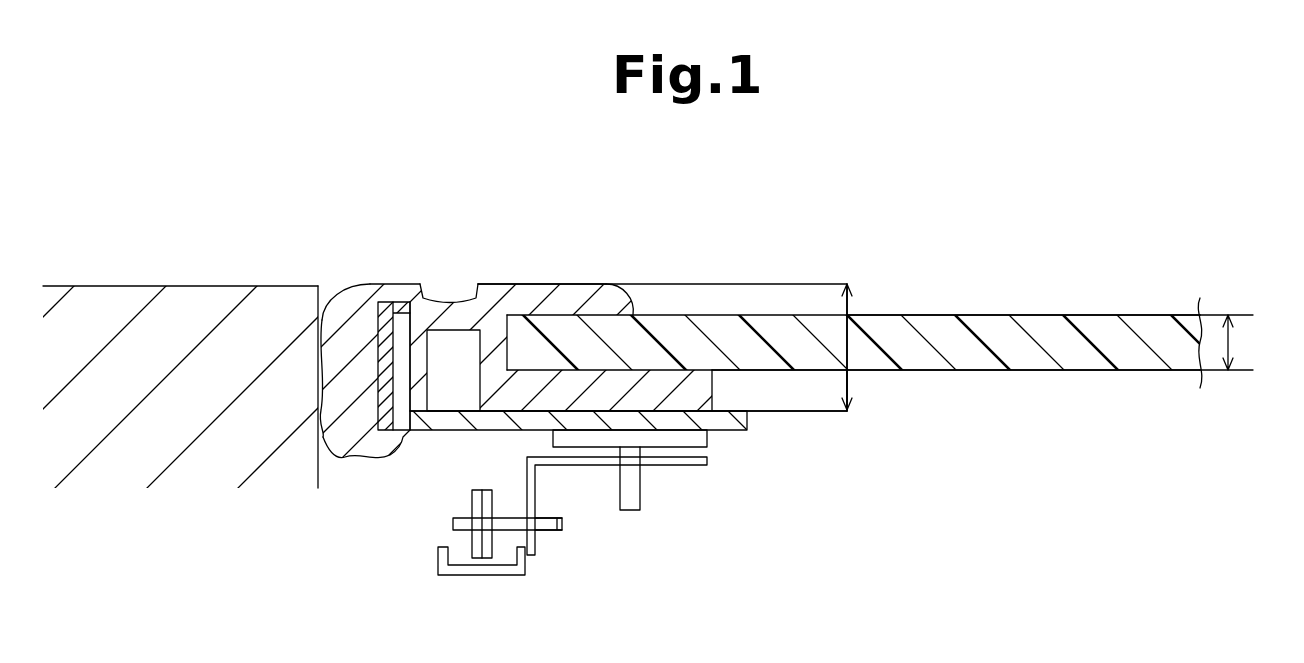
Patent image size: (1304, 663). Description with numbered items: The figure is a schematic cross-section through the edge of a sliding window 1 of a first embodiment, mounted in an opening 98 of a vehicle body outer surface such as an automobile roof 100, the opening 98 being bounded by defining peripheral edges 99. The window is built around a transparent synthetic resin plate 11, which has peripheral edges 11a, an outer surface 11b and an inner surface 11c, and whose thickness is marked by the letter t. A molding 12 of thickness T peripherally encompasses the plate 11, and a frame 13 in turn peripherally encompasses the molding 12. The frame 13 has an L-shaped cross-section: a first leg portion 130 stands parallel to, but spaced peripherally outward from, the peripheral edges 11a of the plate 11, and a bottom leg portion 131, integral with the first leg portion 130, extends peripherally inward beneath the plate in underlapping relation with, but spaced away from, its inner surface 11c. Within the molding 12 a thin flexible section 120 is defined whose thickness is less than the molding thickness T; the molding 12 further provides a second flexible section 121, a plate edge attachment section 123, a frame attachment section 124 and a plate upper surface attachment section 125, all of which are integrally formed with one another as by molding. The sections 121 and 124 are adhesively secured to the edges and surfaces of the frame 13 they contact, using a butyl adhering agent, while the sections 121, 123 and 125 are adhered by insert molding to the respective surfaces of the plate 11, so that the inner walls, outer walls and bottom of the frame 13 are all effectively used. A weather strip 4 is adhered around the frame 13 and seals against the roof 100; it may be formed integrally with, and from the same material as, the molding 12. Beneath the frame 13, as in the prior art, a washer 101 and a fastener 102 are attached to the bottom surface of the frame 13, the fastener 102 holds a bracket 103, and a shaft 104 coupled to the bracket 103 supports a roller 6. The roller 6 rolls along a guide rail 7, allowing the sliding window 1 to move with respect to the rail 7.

The sliding window 1 is at (850, 220).
The weather strip 4 is at (343, 300).
The roller 6 is at (470, 498).
The guide rail 7 is at (448, 573).
The transparent synthetic resin plate 11 is at (993, 302).
The peripheral edges 11a is at (512, 348).
The outer surface 11b is at (1090, 315).
The inner surface 11c is at (1085, 372).
The molding 12 is at (570, 271).
The frame 13 is at (419, 445).
The opening 98 is at (332, 280).
The peripheral edges 99 is at (320, 388).
The roof 100 is at (190, 305).
The washer 101 is at (713, 438).
The fastener 102 is at (630, 510).
The bracket 103 is at (572, 465).
The shaft 104 is at (543, 530).
The thin flexible section 120 is at (450, 318).
The second flexible section 121 is at (698, 390).
The plate edge attachment section 123 is at (487, 367).
The frame attachment section 124 is at (420, 367).
The plate upper surface attachment section 125 is at (518, 300).
The first leg portion 130 is at (392, 305).
The bottom leg portion 131 is at (507, 432).
The molding thickness T is at (850, 348).
The plate thickness t is at (1233, 337).